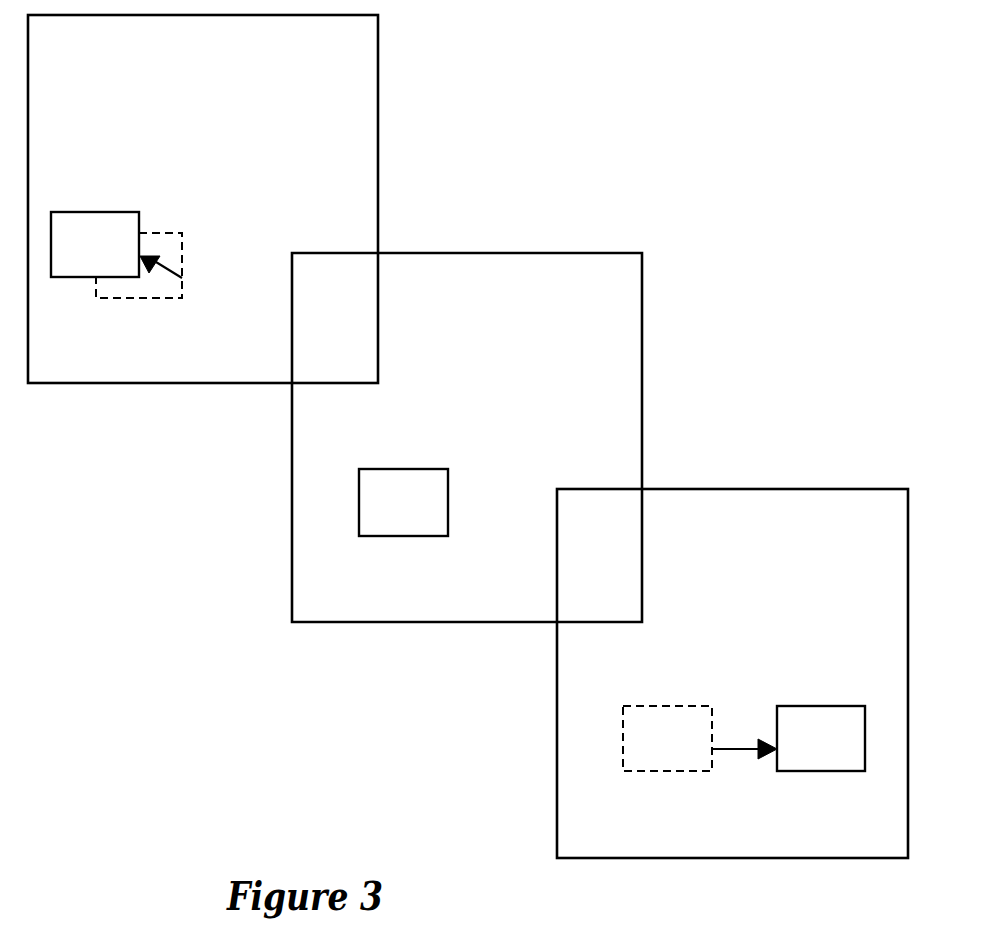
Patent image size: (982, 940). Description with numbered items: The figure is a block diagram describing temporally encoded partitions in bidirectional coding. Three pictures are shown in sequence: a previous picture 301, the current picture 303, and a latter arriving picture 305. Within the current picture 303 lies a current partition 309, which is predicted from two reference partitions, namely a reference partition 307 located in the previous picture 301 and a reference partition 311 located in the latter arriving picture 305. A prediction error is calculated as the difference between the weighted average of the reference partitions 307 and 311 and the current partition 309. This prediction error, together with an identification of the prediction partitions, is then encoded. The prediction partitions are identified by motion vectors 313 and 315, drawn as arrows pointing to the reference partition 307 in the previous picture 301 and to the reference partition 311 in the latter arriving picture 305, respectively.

The previous picture 301 is at (203, 199).
The current picture 303 is at (467, 437).
The latter arriving picture 305 is at (732, 673).
The reference partition 307 is at (95, 244).
The current partition 309 is at (403, 502).
The reference partition 311 is at (821, 738).
The motion vector 313 is at (149, 273).
The motion vector 315 is at (732, 749).